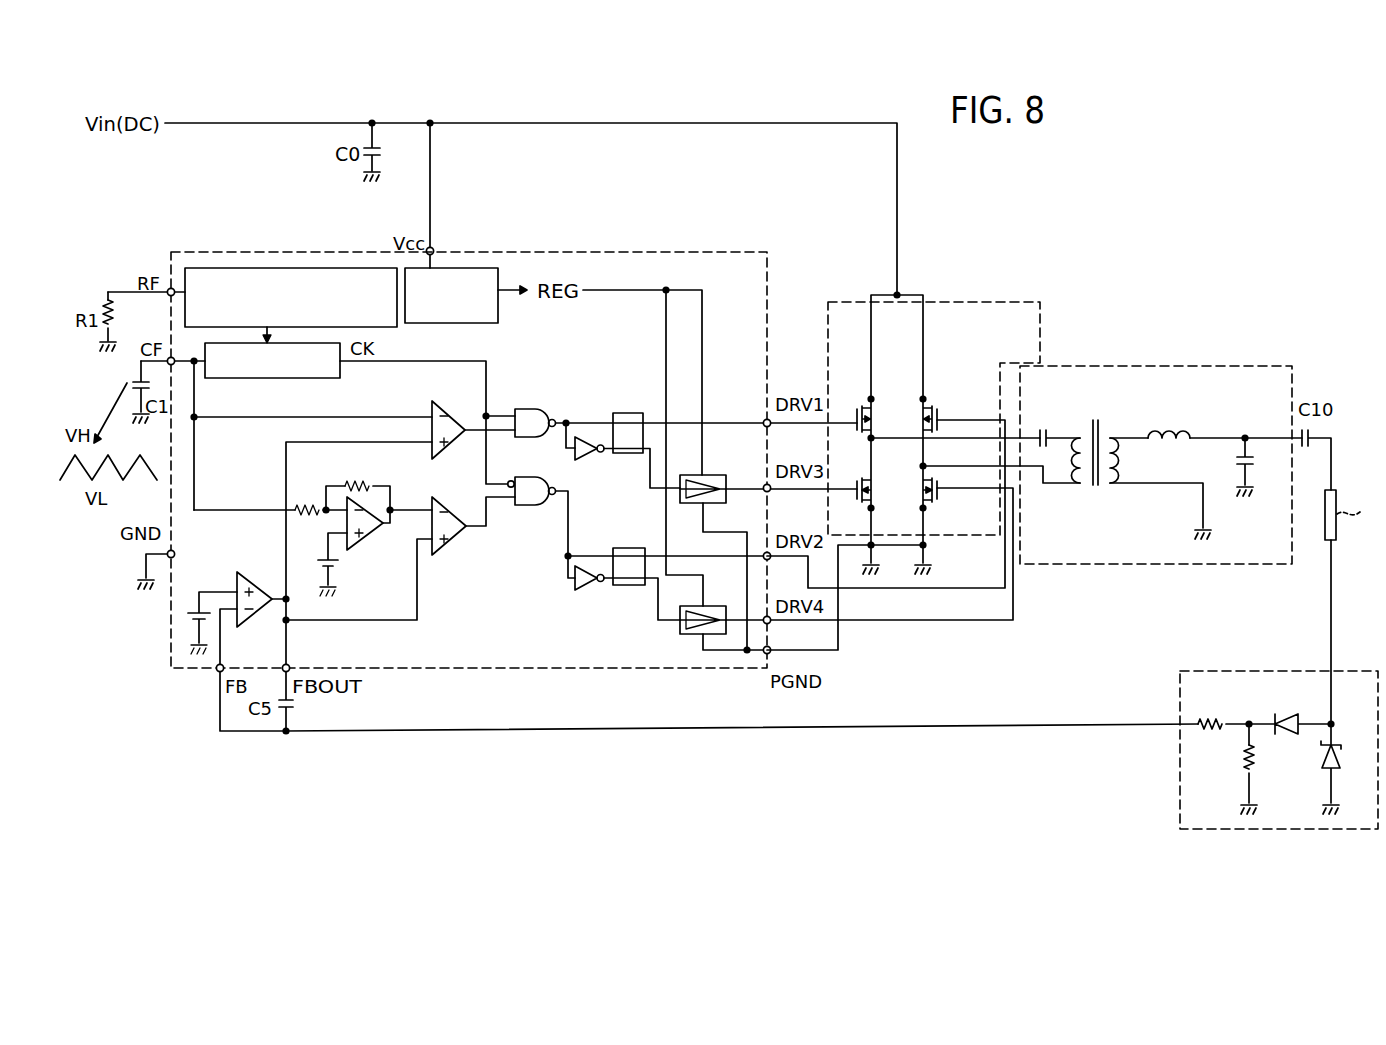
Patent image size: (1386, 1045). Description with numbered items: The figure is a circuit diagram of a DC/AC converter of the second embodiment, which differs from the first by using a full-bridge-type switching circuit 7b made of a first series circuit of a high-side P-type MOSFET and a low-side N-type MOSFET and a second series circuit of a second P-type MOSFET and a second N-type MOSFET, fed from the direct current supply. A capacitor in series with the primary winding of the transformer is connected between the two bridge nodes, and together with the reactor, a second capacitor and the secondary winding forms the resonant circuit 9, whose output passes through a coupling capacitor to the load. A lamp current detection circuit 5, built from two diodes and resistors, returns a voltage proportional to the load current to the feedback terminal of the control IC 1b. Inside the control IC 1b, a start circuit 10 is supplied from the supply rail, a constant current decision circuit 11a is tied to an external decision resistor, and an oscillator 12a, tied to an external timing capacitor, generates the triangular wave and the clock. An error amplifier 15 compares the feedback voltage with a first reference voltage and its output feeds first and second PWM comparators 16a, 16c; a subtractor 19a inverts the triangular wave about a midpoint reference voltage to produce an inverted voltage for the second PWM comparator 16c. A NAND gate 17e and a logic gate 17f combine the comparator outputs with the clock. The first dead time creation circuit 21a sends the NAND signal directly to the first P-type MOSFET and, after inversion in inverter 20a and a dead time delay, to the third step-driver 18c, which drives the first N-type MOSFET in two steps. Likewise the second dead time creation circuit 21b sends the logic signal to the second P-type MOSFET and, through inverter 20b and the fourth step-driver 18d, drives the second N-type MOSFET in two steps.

The control IC 1b is at (692, 250).
The lamp current detection circuit 5 is at (1180, 776).
The full-bridge-type switching circuit (SW network) 7b is at (1008, 302).
The resonant circuit 9 is at (1238, 366).
The start circuit 10 is at (465, 268).
The constant current decision circuit 11a is at (264, 266).
The oscillator 12a is at (340, 372).
The error amplifier 15 is at (250, 572).
The first PWM comparator 16a is at (457, 412).
The second PWM comparator 16c is at (452, 540).
The NAND gate 17e is at (528, 409).
The logic gate 17f is at (528, 508).
The third step-driver 18c is at (726, 476).
The fourth step-driver 18d is at (680, 630).
The subtractor 19a is at (372, 540).
The inverter 20a is at (590, 462).
The inverter 20b is at (590, 592).
The first dead time creation circuit 21a is at (630, 413).
The second dead time creation circuit 21b is at (637, 548).